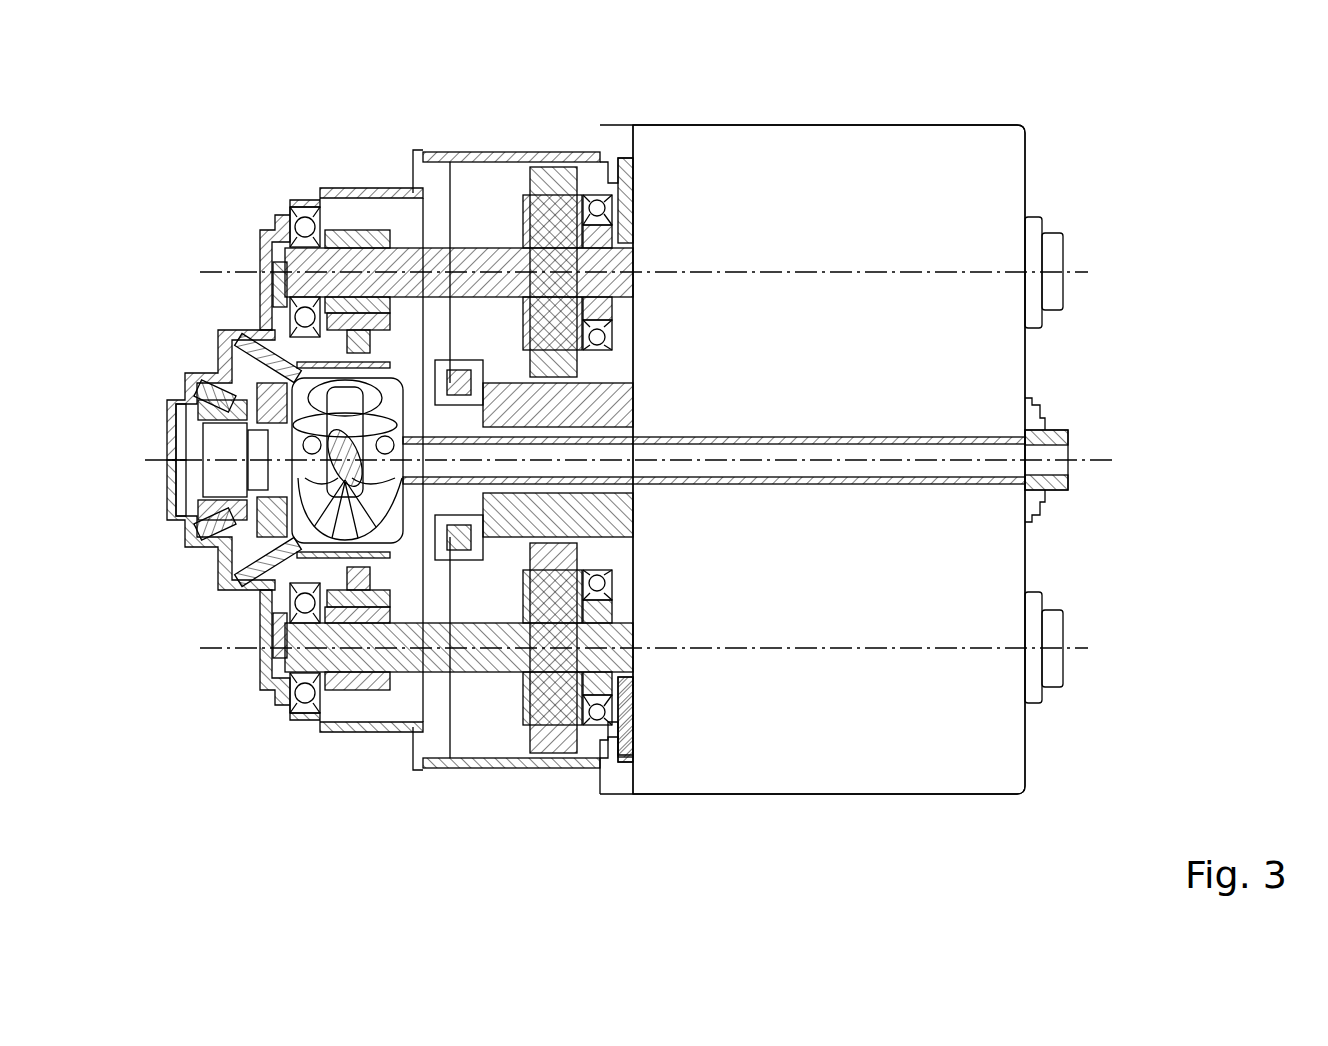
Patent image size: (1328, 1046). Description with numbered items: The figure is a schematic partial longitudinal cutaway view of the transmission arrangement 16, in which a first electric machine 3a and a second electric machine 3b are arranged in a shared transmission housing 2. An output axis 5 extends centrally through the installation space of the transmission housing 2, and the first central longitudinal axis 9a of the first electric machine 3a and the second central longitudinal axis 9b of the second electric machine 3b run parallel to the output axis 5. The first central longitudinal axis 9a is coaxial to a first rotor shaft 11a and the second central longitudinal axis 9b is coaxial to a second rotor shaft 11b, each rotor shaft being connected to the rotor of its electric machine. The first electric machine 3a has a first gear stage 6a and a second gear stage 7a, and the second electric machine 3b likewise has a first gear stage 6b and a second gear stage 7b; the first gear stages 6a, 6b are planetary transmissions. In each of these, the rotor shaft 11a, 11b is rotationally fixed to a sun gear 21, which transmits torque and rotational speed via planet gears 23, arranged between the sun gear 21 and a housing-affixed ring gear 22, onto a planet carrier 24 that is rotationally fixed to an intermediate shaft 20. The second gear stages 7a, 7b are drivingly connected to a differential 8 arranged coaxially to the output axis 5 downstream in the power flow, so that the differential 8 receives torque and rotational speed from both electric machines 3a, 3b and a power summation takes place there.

The transmission housing 2 is at (855, 125).
The first electric machine 3a is at (938, 232).
The second electric machine 3b is at (848, 740).
The output axis 5 is at (1060, 437).
The first gear stage 6a is at (538, 143).
The first gear stage 6b is at (540, 777).
The second gear stage 7a is at (343, 223).
The second gear stage 7b is at (340, 702).
The differential 8 is at (307, 477).
The first central longitudinal axis 9a is at (1070, 272).
The second central longitudinal axis 9b is at (1070, 645).
The first rotor shaft 11a is at (612, 250).
The second rotor shaft 11b is at (612, 670).
The transmission arrangement 16 is at (627, 458).
The intermediate shaft 20 is at (413, 257).
The sun gear 21 is at (658, 127).
The ring gear 22 is at (530, 172).
The planet gears 23 is at (570, 205).
The planet carrier 24 is at (615, 315).